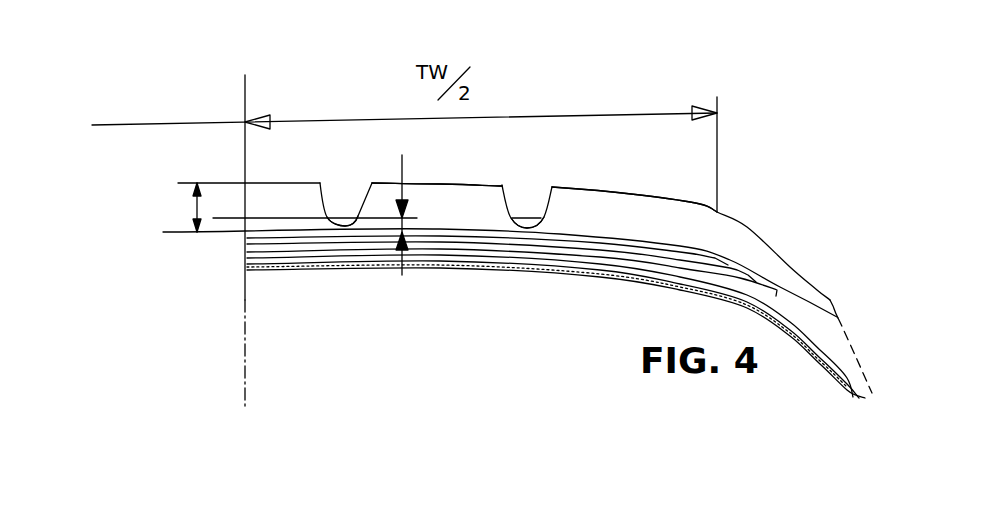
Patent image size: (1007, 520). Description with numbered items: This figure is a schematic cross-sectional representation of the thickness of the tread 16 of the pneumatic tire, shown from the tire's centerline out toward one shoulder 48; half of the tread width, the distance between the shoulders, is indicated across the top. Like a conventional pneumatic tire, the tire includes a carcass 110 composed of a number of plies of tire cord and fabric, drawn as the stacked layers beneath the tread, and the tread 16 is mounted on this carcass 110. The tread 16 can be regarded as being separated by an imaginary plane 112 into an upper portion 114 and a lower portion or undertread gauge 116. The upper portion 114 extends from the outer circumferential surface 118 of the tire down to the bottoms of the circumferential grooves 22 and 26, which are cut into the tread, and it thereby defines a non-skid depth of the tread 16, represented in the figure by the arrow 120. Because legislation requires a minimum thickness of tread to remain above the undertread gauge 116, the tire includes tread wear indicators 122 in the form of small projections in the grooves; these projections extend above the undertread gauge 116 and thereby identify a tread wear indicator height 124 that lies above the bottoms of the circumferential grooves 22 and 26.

The tread 16 is at (458, 197).
The circumferential groove 22 is at (527, 203).
The circumferential groove 26 is at (343, 192).
The shoulder 48 is at (720, 138).
The carcass 110 is at (560, 275).
The imaginary plane 112 is at (170, 233).
The upper portion 114 is at (580, 213).
The undertread gauge 116 is at (693, 243).
The outer circumferential surface 118 is at (282, 182).
The non-skid depth arrow 120 is at (197, 203).
The tread wear indicator 122 is at (353, 223).
The tread wear indicator height 124 is at (232, 218).